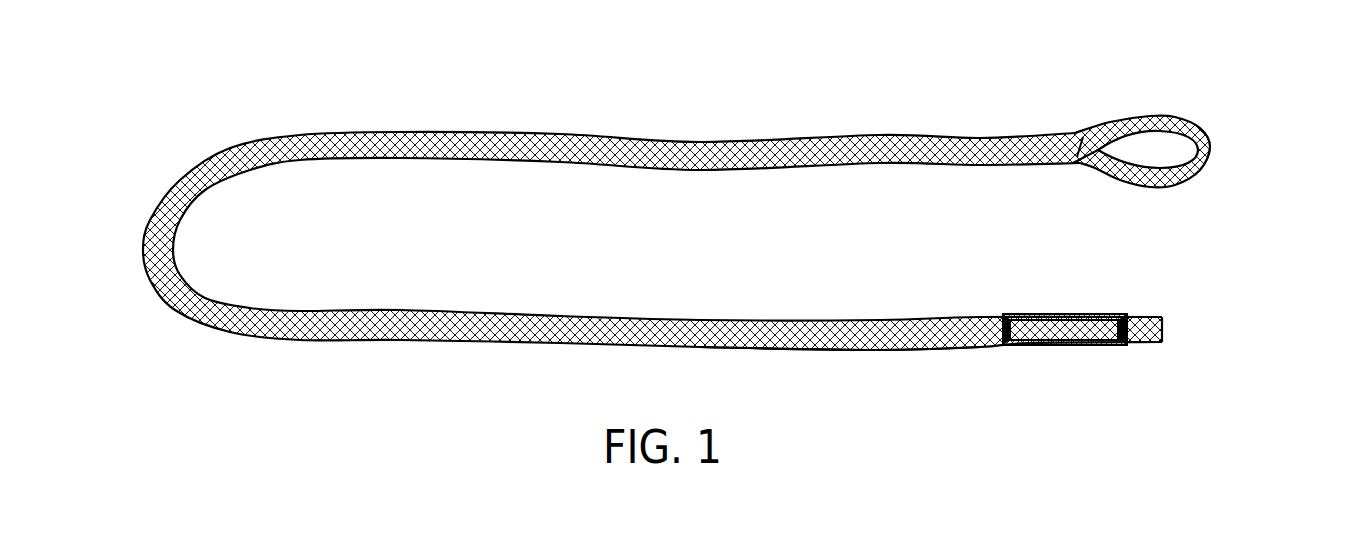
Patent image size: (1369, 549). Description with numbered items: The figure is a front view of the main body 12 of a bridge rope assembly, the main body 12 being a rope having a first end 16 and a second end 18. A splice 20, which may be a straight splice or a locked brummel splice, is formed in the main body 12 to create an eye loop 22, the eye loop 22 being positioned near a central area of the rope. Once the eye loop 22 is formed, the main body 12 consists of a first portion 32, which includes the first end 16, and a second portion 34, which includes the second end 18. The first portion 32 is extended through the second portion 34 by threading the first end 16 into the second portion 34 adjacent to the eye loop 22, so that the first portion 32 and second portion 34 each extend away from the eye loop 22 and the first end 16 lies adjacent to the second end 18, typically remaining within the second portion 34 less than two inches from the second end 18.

The main body 12 is at (772, 113).
The splice 20 is at (1080, 133).
The eye loop 22 is at (1213, 168).
The first portion 32 is at (1035, 347).
The second end 18 is at (1163, 323).
The first end 16 is at (1140, 343).
The second portion 34 is at (873, 348).